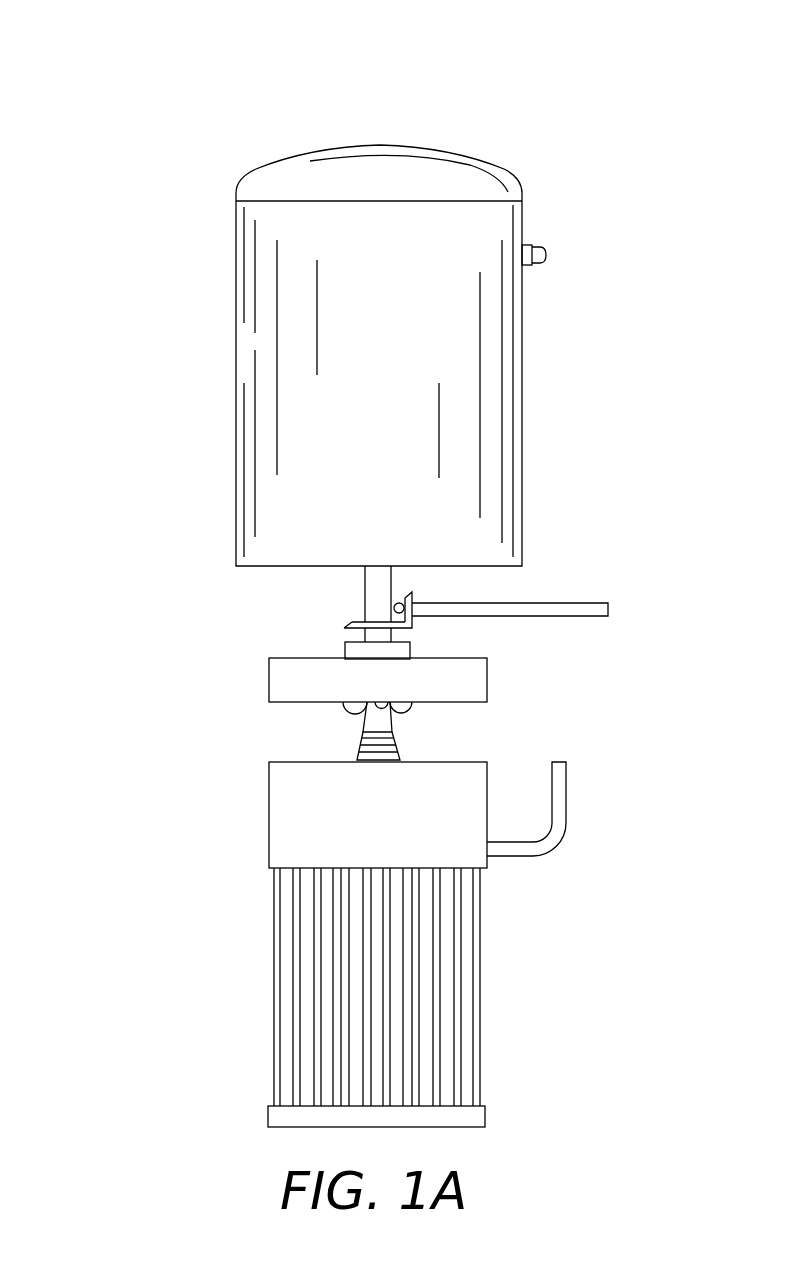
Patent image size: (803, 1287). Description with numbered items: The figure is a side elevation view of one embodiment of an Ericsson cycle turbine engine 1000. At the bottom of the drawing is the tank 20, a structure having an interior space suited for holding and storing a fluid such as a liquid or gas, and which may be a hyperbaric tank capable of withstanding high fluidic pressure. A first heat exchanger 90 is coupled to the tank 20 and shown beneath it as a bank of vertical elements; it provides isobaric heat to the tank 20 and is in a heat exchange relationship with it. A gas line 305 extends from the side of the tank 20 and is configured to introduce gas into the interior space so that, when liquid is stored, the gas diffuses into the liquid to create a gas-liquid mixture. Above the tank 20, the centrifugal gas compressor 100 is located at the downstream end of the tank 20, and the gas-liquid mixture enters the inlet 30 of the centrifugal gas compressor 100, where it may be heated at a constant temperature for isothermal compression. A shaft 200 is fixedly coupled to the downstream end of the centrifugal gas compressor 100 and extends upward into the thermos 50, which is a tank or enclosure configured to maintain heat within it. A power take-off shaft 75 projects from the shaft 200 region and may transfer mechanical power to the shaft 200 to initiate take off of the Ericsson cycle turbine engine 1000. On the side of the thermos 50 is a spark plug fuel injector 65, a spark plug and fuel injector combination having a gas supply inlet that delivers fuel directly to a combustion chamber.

The Ericsson cycle turbine engine 1000 is at (172, 157).
The thermos 50 is at (230, 260).
The spark plug fuel injector 65 is at (540, 268).
The shaft 200 is at (350, 586).
The power take-off shaft 75 is at (585, 604).
The centrifugal gas compressor 100 is at (262, 684).
The inlet 30 is at (398, 752).
The tank 20 is at (263, 801).
The gas line 305 is at (565, 808).
The first heat exchanger 90 is at (267, 950).